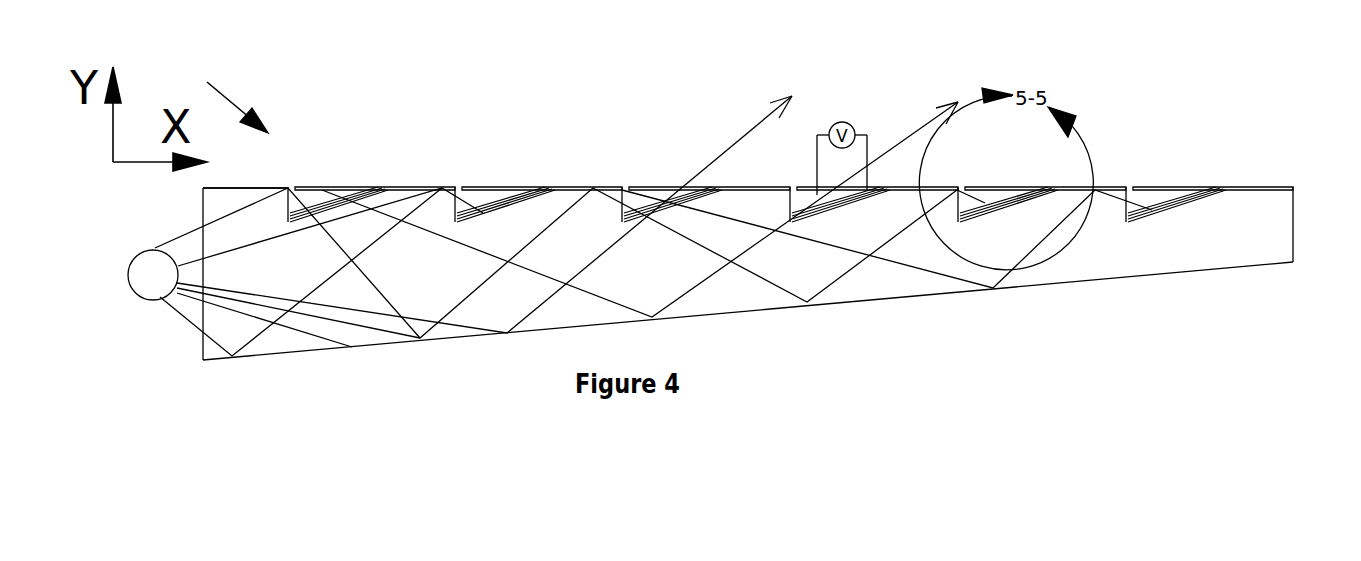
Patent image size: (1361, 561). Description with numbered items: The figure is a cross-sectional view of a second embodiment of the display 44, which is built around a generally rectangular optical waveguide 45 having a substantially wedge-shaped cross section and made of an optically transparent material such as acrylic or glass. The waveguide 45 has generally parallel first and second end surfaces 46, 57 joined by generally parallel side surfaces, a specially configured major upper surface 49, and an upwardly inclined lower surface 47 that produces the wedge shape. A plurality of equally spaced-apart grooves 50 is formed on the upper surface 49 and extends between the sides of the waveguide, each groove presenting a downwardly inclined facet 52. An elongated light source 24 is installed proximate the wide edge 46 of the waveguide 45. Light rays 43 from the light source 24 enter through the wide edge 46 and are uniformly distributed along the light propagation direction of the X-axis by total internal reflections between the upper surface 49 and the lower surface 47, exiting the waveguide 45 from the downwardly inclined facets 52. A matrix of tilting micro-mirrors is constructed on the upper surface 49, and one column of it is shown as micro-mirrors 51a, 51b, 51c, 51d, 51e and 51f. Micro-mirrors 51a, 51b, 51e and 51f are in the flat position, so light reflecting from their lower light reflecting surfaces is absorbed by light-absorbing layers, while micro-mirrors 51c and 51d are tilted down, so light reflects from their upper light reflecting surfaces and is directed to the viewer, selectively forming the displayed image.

The elongated light source 24 is at (153, 275).
The light rays 43 is at (297, 340).
The display 44 is at (221, 94).
The optical waveguide 45 is at (873, 273).
The first end surface 46 is at (205, 318).
The lower surface 47 is at (950, 294).
The major upper surface 49 is at (270, 190).
The grooves 50 is at (490, 196).
The micro-mirror 51a is at (362, 187).
The micro-mirror 51b is at (527, 187).
The micro-mirror 51c is at (656, 192).
The micro-mirror 51d is at (878, 187).
The micro-mirror 51e is at (1008, 187).
The micro-mirror 51f is at (1175, 187).
The downwardly inclined facets 52 is at (291, 190).
The second end surface 57 is at (1293, 223).